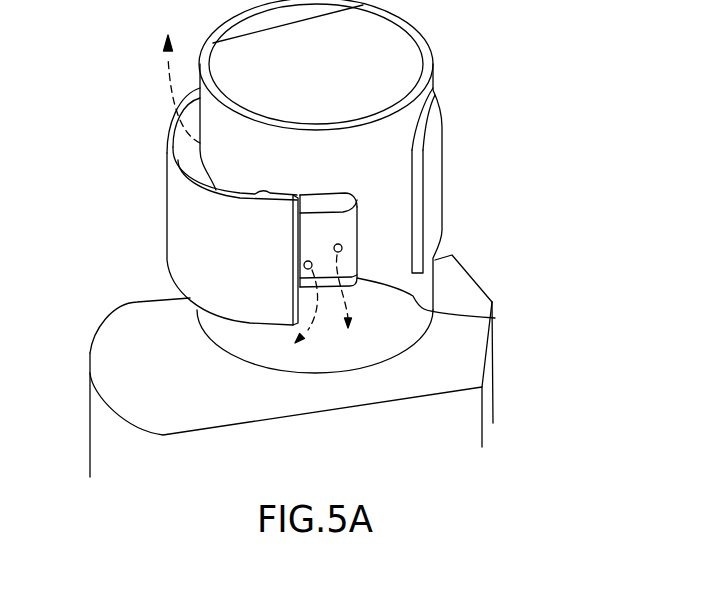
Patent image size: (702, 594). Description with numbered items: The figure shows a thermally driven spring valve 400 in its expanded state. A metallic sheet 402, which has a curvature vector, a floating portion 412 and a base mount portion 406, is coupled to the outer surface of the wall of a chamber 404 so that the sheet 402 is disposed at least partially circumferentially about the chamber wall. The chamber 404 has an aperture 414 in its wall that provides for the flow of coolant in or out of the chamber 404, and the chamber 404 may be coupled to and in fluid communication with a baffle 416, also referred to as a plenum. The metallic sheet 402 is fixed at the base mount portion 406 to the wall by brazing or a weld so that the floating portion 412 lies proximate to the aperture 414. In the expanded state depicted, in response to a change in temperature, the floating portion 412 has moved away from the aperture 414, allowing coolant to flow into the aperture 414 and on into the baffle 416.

The thermally driven spring valve 400 is at (447, 134).
The metallic sheet 402 is at (254, 246).
The chamber 404 is at (372, 168).
The base mount portion 406 is at (433, 197).
The floating portion 412 is at (237, 190).
The aperture 414 is at (494, 318).
The baffle 416 is at (167, 372).